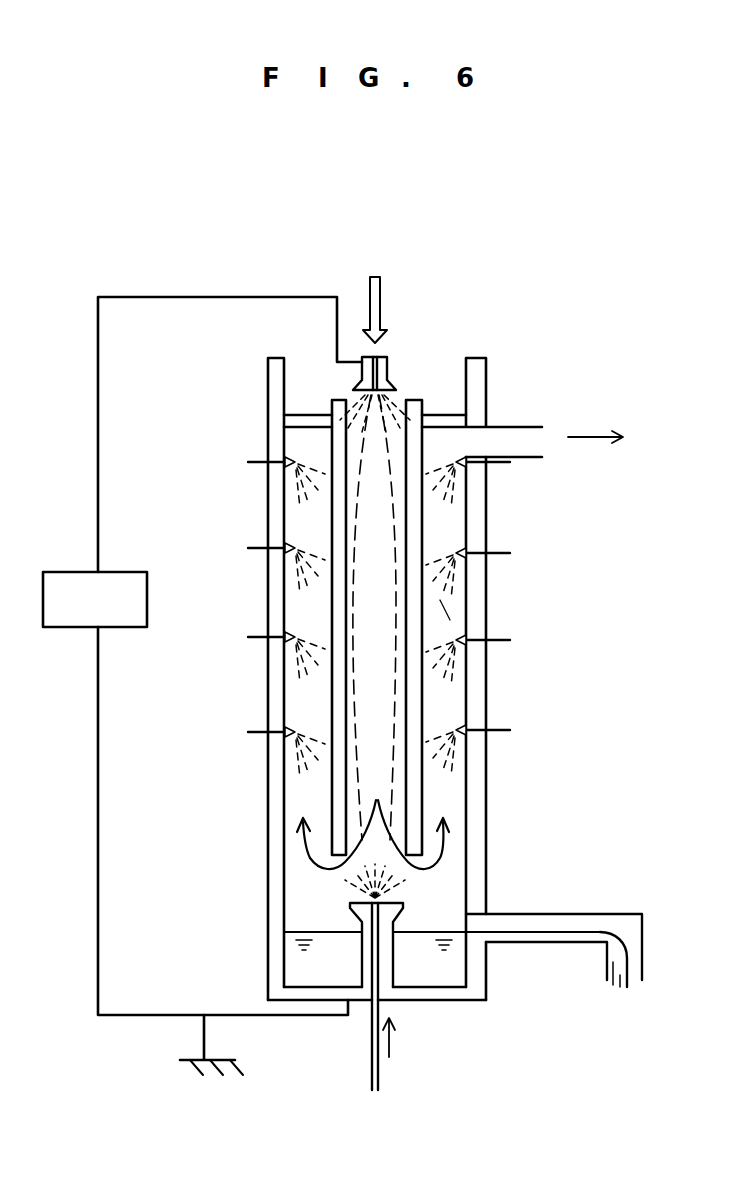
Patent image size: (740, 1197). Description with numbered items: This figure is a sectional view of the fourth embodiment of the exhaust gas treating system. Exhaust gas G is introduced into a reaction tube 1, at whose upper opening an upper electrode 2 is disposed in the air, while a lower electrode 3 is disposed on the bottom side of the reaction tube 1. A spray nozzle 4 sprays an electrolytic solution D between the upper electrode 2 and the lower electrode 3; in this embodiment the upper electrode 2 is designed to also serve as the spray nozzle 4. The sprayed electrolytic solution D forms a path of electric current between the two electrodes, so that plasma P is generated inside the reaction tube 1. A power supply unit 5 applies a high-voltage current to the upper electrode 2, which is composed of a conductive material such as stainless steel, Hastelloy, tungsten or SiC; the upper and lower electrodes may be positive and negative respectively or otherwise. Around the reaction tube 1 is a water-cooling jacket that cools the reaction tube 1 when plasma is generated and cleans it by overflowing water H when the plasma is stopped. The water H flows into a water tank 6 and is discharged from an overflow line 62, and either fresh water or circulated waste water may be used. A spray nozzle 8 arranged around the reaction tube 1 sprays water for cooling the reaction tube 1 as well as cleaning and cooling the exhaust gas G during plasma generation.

The reaction tube 1 is at (423, 518).
The upper electrode 2 is at (303, 326).
The spray nozzle 4 is at (362, 392).
The lower electrode 3 is at (383, 918).
The power supply unit 5 is at (58, 577).
The water tank 6 is at (310, 967).
The spray nozzle 8 is at (287, 737).
The overflow line 62 is at (614, 912).
The exhaust gas G is at (372, 275).
The electrolytic solution D is at (407, 392).
The plasma P is at (378, 537).
The water H is at (450, 622).